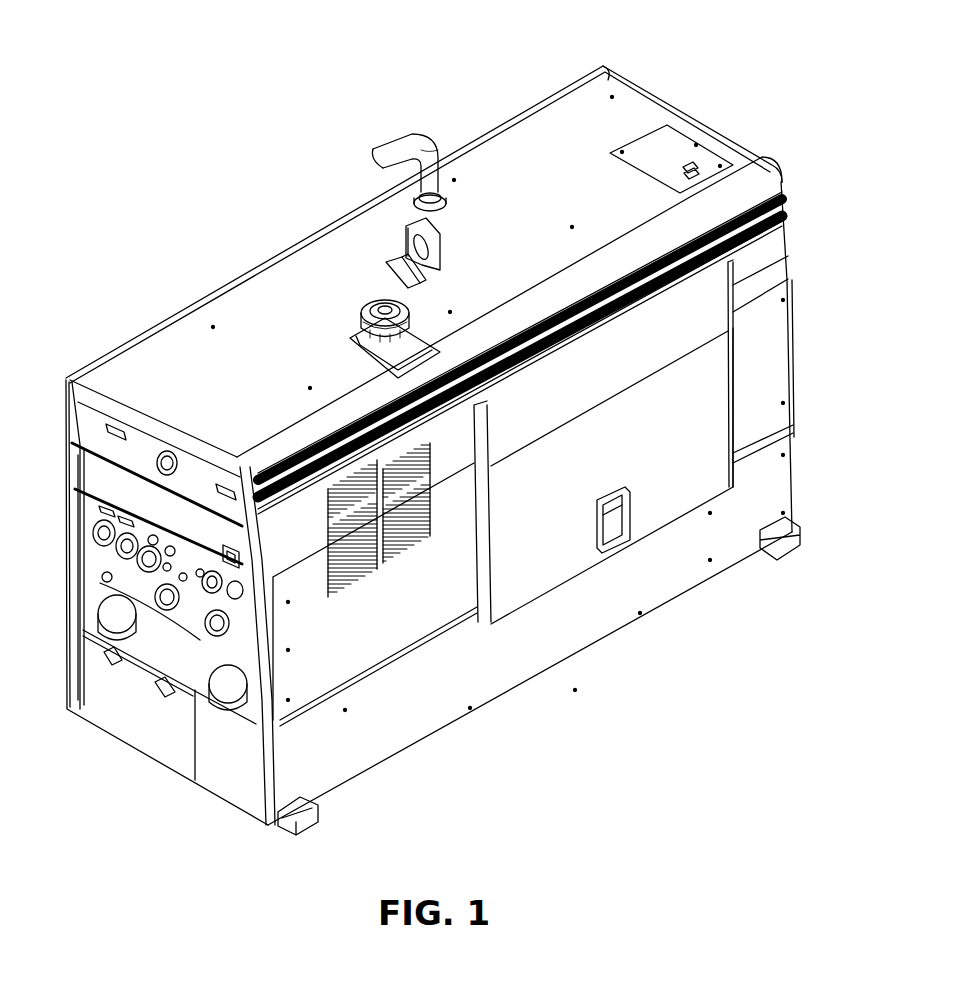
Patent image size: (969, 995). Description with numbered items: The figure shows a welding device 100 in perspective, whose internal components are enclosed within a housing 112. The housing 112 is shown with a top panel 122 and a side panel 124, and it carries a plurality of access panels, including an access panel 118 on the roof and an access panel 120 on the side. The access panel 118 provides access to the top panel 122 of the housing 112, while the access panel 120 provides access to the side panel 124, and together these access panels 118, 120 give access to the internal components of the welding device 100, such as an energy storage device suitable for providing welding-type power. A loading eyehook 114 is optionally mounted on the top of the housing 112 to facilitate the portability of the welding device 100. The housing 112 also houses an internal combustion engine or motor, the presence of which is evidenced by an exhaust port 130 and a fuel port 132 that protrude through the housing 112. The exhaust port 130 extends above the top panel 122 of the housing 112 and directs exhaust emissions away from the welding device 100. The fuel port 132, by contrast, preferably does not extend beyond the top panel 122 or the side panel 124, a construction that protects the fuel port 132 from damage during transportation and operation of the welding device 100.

The welding device 100 is at (433, 422).
The housing 112 is at (138, 336).
The loading eyehook 114 is at (437, 242).
The access panel 118 is at (674, 168).
The access panel 120 is at (638, 455).
The top panel 122 is at (572, 200).
The side panel 124 is at (400, 615).
The exhaust port 130 is at (400, 142).
The fuel port 132 is at (368, 302).